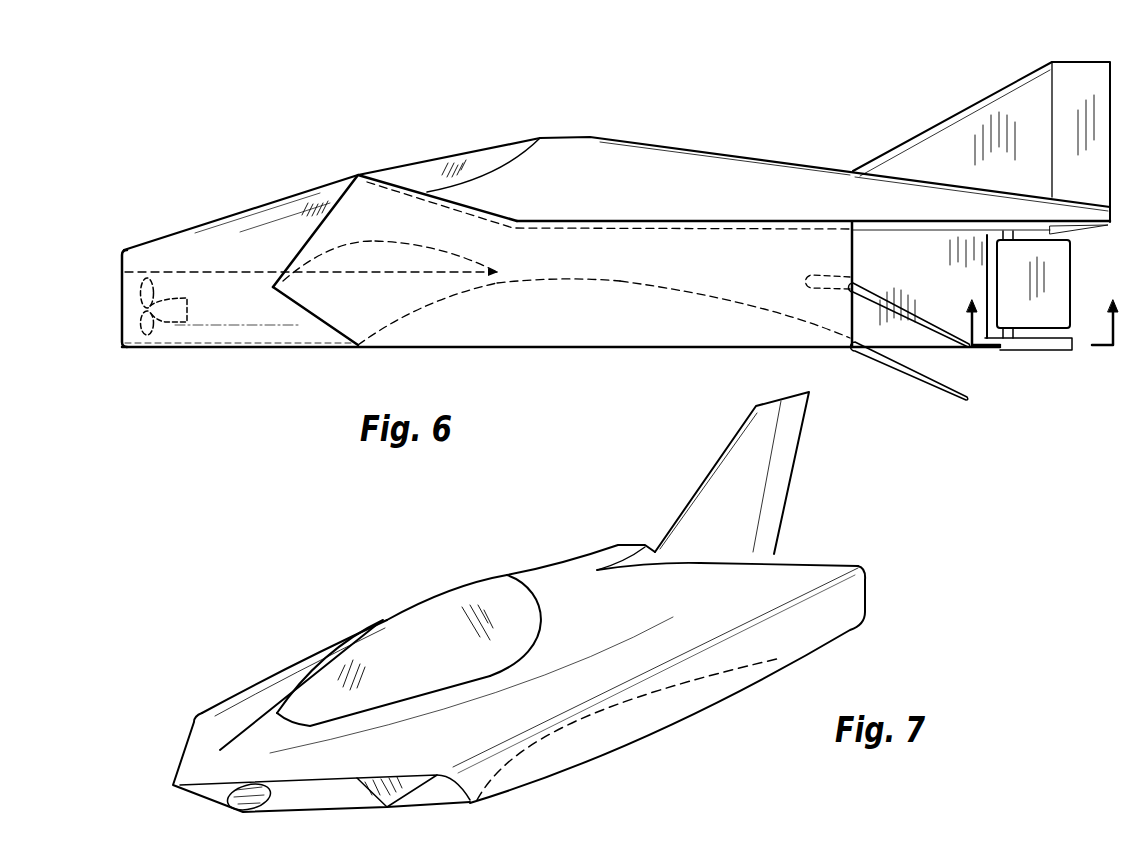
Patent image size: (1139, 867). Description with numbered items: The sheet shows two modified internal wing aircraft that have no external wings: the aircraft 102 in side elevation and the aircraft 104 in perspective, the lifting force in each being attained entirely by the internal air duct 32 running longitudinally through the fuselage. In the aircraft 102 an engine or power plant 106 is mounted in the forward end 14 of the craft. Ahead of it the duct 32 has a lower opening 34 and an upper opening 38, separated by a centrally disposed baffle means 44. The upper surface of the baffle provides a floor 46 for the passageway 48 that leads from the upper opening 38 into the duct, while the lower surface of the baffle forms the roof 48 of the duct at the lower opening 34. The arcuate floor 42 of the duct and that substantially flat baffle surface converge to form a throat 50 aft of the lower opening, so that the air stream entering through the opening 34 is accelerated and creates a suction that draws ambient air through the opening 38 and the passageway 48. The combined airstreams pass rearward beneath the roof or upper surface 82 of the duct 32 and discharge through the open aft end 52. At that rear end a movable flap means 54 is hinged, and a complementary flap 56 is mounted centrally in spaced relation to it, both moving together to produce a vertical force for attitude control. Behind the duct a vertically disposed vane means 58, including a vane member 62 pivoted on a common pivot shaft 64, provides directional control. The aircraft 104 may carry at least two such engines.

In FIG. 6, the aircraft 102 is at (718, 152).
In FIG. 6, the roof or upper surface of the duct 82 is at (653, 226).
In FIG. 6, the passageway (also roof or upper surface of the duct) 48 is at (493, 234).
In FIG. 6, the baffle means 44 is at (390, 248).
In FIG. 6, the floor or bottom of the passageway 46 is at (428, 244).
In FIG. 6, the throat 50 is at (497, 281).
In FIG. 6, the floor or bottom of the duct 42 is at (557, 278).
In FIG. 6, the internal air duct 32 is at (662, 287).
In FIG. 6, the opening 38 is at (300, 255).
In FIG. 6, the opening 34 is at (293, 303).
In FIG. 6, the engine or power plant 106 is at (170, 320).
In FIG. 6, the open aft end of the duct 52 is at (853, 253).
In FIG. 6, the movable flap 56 is at (938, 318).
In FIG. 6, the movable flap means 54 is at (918, 378).
In FIG. 6, the vane member 62 is at (1067, 253).
In FIG. 6, the vane means 58 is at (1057, 288).
In FIG. 6, the common hinge or pivot shaft 64 is at (1015, 337).
In FIG. 6, the forward end 14 is at (1042, 345).
In FIG. 7, the aircraft 104 is at (593, 770).